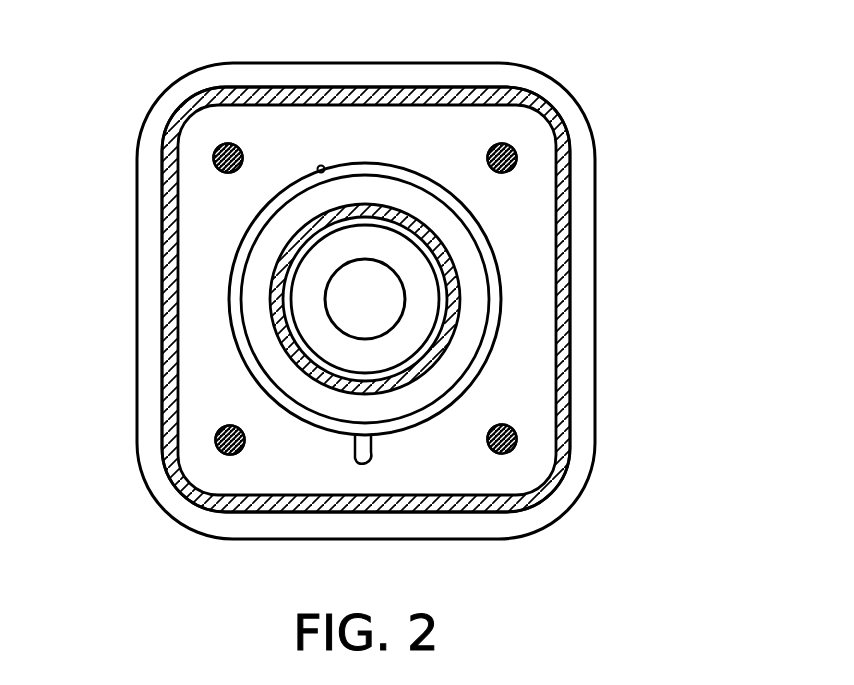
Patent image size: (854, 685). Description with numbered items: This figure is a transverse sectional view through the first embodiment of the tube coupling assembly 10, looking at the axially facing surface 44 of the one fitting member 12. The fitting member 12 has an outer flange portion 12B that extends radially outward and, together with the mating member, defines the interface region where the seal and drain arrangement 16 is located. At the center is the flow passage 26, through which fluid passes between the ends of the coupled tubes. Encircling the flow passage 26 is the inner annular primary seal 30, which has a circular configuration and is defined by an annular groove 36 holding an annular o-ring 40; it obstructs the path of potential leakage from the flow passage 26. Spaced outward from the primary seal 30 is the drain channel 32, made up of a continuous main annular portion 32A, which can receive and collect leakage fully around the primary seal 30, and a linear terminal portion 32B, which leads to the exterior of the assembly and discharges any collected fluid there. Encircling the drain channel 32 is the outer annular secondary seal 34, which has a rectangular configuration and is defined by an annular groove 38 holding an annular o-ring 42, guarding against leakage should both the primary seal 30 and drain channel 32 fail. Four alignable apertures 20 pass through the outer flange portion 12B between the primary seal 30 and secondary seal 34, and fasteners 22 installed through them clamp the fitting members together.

The tube coupling assembly 10 is at (601, 85).
The fitting member 12 is at (365, 301).
The outer flange portion 12B is at (537, 192).
The seal and drain arrangement 16 is at (512, 312).
The alignable apertures 20 is at (362, 302).
The fasteners 22 is at (232, 145).
The flow passage 26 is at (350, 335).
The inner annular primary seal 30 is at (460, 258).
The drain channel 32 is at (365, 302).
The main annular portion 32A is at (327, 160).
The linear terminal portion 32B is at (371, 466).
The outer annular secondary seal 34 is at (359, 261).
The annular groove 36 is at (440, 348).
The annular groove 38 is at (163, 254).
The annular o-ring 40 is at (408, 368).
The annular o-ring 42 is at (168, 302).
The axially facing surface 44 is at (377, 142).